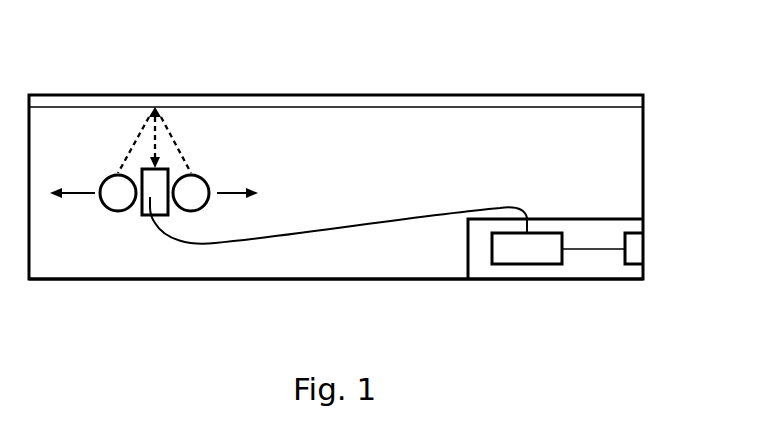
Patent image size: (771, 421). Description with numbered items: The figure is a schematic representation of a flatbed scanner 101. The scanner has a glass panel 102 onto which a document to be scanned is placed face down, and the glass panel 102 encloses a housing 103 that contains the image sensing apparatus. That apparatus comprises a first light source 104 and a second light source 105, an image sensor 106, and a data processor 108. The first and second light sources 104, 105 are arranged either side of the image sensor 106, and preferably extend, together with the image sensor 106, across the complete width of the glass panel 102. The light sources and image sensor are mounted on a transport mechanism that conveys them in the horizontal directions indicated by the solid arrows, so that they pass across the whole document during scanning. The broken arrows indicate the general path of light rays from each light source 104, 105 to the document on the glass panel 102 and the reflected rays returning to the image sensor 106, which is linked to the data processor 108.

The flatbed scanner 101 is at (643, 173).
The glass panel 102 is at (625, 103).
The housing 103 is at (118, 280).
The first light source 104 is at (110, 178).
The second light source 105 is at (200, 178).
The image sensor 106 is at (148, 217).
The data processor 108 is at (525, 263).